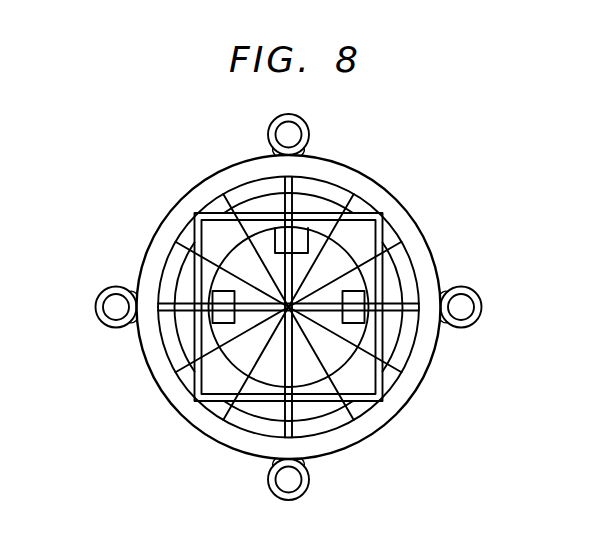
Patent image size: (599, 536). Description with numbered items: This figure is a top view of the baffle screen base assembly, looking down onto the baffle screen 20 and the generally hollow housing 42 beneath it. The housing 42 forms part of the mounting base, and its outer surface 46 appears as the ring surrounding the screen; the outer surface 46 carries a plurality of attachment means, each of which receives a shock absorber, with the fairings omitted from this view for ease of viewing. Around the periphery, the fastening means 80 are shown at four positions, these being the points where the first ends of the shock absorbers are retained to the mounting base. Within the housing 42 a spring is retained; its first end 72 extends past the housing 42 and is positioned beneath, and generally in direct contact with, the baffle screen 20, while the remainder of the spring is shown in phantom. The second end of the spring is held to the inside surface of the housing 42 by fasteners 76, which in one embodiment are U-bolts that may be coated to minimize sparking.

The baffle screen 20 is at (418, 388).
The outer surface 46 is at (208, 180).
The fastening means 80 is at (95, 303).
The housing 42 is at (225, 237).
The first end 72 is at (376, 271).
The fasteners 76 is at (312, 237).